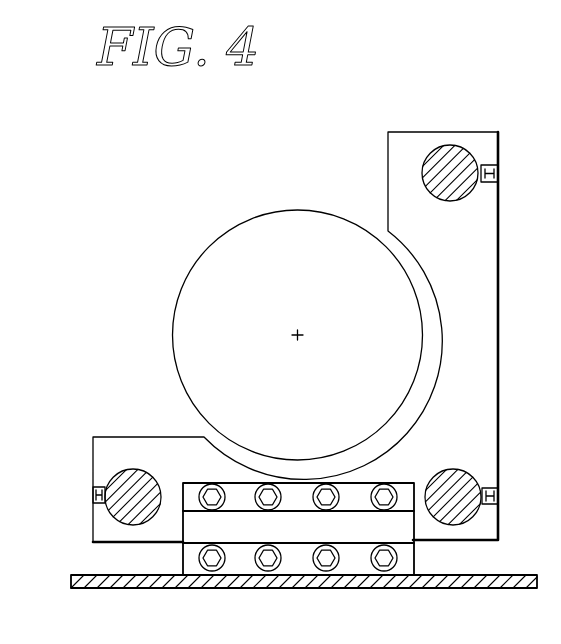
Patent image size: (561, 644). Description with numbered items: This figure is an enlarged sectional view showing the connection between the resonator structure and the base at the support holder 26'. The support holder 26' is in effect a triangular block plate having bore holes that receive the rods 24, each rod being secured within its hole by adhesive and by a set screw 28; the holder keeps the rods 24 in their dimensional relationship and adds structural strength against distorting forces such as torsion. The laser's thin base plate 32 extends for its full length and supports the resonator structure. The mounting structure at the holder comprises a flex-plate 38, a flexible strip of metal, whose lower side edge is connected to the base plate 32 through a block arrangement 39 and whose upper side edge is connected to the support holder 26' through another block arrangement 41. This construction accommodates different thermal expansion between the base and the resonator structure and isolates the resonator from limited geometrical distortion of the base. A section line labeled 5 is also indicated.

The section line 5- 5 is at (298, 618).
The rods 24 is at (448, 157).
The support holder 26' is at (318, 337).
The set screw 28 is at (500, 173).
The base plate 32 is at (460, 578).
The flex-plate 38 is at (345, 530).
The block arrangement 39 is at (245, 561).
The block arrangement 41 is at (355, 492).